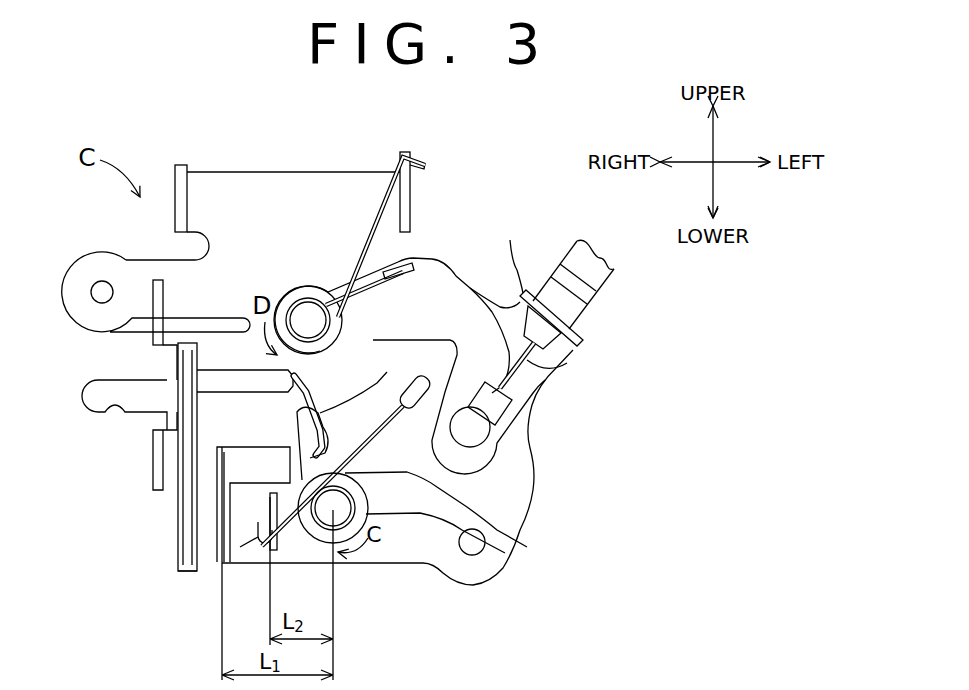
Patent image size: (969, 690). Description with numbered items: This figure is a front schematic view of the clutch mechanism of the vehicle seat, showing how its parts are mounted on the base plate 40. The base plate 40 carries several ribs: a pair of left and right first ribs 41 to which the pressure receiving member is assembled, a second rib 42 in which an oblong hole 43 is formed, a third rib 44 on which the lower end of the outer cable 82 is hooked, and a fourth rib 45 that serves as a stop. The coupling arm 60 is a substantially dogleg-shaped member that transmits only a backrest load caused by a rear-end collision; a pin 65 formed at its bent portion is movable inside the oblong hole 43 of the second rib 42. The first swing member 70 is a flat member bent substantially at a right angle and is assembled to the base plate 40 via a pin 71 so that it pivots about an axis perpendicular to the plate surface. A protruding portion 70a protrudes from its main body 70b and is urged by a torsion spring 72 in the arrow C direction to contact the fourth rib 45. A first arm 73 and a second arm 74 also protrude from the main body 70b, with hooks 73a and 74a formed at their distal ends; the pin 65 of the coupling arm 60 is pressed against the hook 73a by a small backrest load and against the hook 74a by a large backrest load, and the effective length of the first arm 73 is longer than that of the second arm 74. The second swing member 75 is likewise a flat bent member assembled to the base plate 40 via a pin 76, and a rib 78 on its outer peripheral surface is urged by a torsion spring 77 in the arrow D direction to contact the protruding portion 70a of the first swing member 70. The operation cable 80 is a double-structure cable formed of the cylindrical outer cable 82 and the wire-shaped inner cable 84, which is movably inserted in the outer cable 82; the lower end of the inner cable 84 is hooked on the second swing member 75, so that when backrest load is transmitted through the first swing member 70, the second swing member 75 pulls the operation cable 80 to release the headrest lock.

The base plate 40 is at (533, 495).
The first ribs 41 is at (183, 163).
The second rib 42 is at (183, 550).
The oblong hole 43 is at (195, 508).
The third rib 44 is at (533, 293).
The fourth rib 45 is at (400, 408).
The coupling arm 60 is at (152, 473).
The pin 65 is at (237, 376).
The first swing member 70 is at (443, 496).
The protruding portion 70a is at (347, 430).
The main body 70b is at (480, 530).
The pin 71 is at (373, 523).
The torsion spring 72 is at (377, 500).
The first arm 73 is at (260, 457).
The hook 73a is at (225, 457).
The second arm 74 is at (298, 538).
The hook 74a is at (215, 560).
The second swing member 75 is at (440, 291).
The pin 76 is at (300, 312).
The torsion spring 77 is at (306, 300).
The rib 78 is at (305, 503).
The operation cable 80 is at (594, 332).
The outer cable 82 is at (590, 290).
The inner cable 84 is at (573, 353).